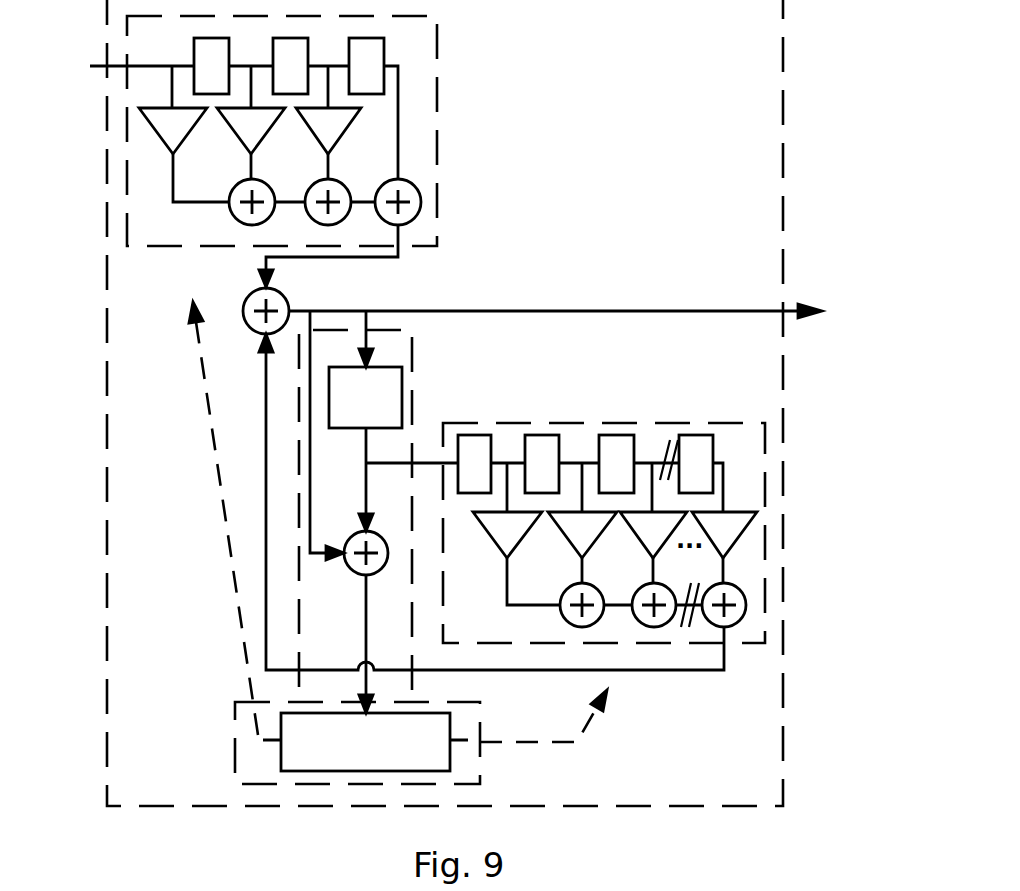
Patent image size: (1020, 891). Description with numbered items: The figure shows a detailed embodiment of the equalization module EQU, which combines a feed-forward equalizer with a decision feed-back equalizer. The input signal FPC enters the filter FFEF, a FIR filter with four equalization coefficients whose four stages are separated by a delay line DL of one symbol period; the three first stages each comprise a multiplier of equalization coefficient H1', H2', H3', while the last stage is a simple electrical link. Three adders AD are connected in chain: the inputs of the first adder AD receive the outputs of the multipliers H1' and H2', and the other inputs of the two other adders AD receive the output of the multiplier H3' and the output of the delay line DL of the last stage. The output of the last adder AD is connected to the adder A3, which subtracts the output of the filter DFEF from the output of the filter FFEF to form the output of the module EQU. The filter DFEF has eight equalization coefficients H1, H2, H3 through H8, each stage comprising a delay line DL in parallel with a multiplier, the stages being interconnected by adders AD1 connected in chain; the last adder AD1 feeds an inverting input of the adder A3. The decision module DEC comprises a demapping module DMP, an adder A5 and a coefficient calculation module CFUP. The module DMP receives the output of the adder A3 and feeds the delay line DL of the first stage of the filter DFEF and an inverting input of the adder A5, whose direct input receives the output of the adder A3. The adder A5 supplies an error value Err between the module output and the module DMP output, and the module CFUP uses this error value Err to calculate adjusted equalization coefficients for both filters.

The input signal to equalizer FPC is at (218, 115).
The delay line DL is at (453, 265).
The multiplier of equalization coefficient H1' is at (184, 155).
The multiplier of equalization coefficient H2' is at (251, 143).
The multiplier of equalization coefficient H3' is at (328, 143).
The adder AD is at (237, 181).
The filter of FIR type FFEF is at (282, 131).
The adder A3 is at (244, 301).
The demapping module DMP is at (365, 369).
The decision module DEC is at (355, 516).
The adder A5 is at (351, 535).
The filter of FIR type DFEF is at (604, 533).
The multiplier of equalization coefficient H1 is at (516, 558).
The multiplier of equalization coefficient H2 is at (582, 547).
The multiplier of equalization coefficient H3 is at (653, 547).
The multiplier of equalization coefficient H8 is at (724, 547).
The adder AD1 is at (563, 586).
The error value Err is at (347, 644).
The coefficient calculation module CFUP is at (383, 543).
The equalization module EQU is at (445, 403).